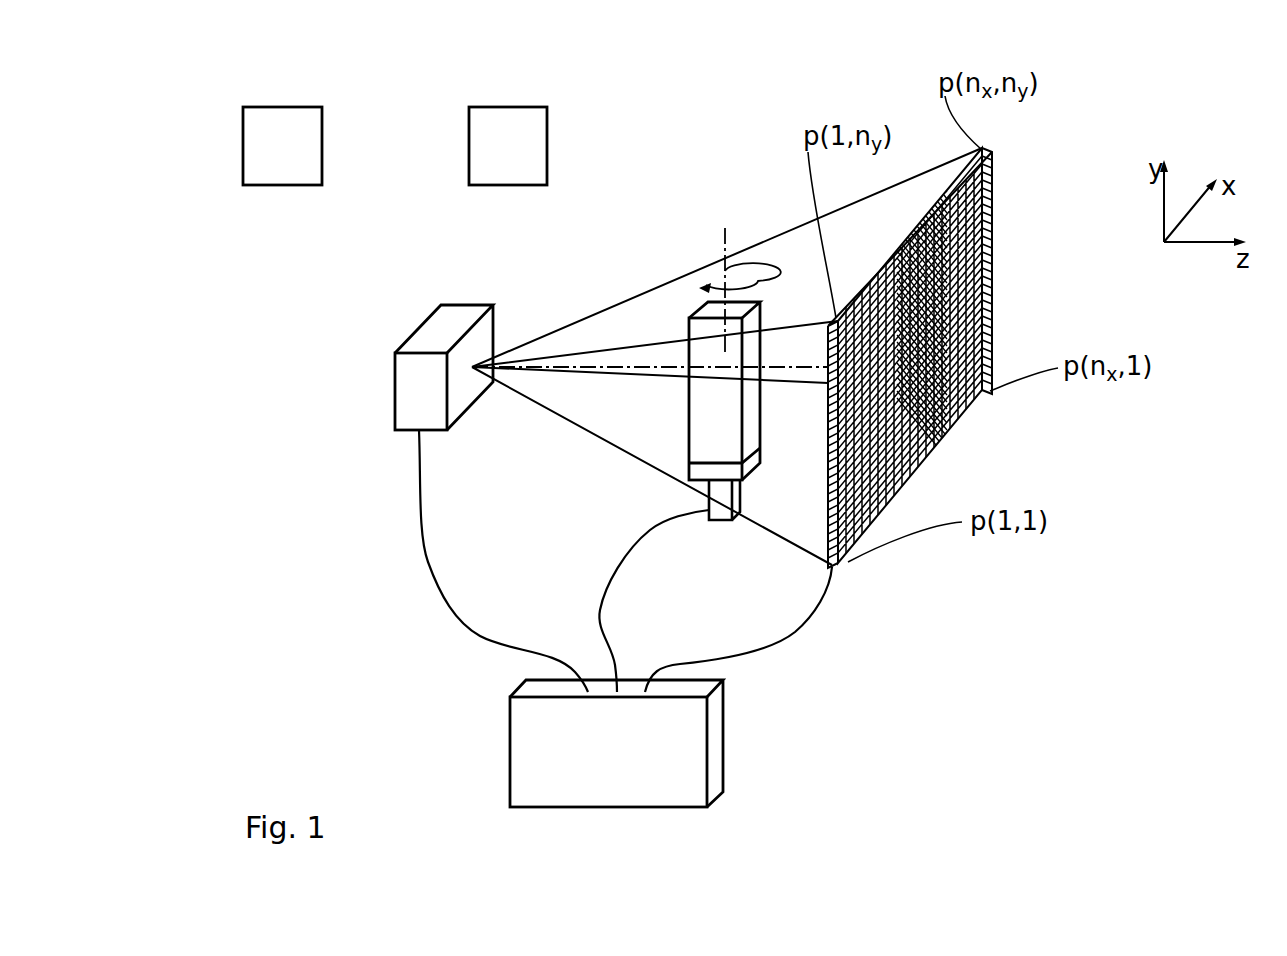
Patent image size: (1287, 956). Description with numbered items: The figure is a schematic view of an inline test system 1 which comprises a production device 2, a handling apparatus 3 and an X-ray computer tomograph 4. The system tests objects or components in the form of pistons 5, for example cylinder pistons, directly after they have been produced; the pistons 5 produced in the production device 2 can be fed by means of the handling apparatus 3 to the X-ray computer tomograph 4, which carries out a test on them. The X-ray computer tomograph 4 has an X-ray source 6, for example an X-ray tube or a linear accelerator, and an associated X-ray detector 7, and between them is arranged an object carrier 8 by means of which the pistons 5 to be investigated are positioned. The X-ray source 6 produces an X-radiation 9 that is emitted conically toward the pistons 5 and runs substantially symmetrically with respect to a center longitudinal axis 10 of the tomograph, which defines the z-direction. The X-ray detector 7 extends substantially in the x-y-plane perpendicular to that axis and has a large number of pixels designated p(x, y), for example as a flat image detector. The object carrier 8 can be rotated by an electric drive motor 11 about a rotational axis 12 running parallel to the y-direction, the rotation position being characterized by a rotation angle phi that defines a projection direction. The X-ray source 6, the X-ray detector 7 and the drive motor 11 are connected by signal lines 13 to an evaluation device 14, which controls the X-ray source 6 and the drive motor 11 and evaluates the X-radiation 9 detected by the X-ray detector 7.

The inline test system 1 is at (582, 84).
The production device 2 is at (288, 112).
The handling apparatus 3 is at (504, 112).
The X-ray computer tomograph 4 is at (704, 222).
The piston 5 is at (697, 310).
The X-ray source 6 is at (440, 322).
The X-ray detector 7 is at (1005, 206).
The object carrier 8 is at (697, 473).
The X-radiation 9 is at (615, 316).
The center longitudinal axis 10 is at (560, 365).
The drive motor 11 is at (723, 512).
The rotational axis 12 is at (725, 246).
The signal lines 13 is at (426, 557).
The evaluation device 14 is at (716, 750).